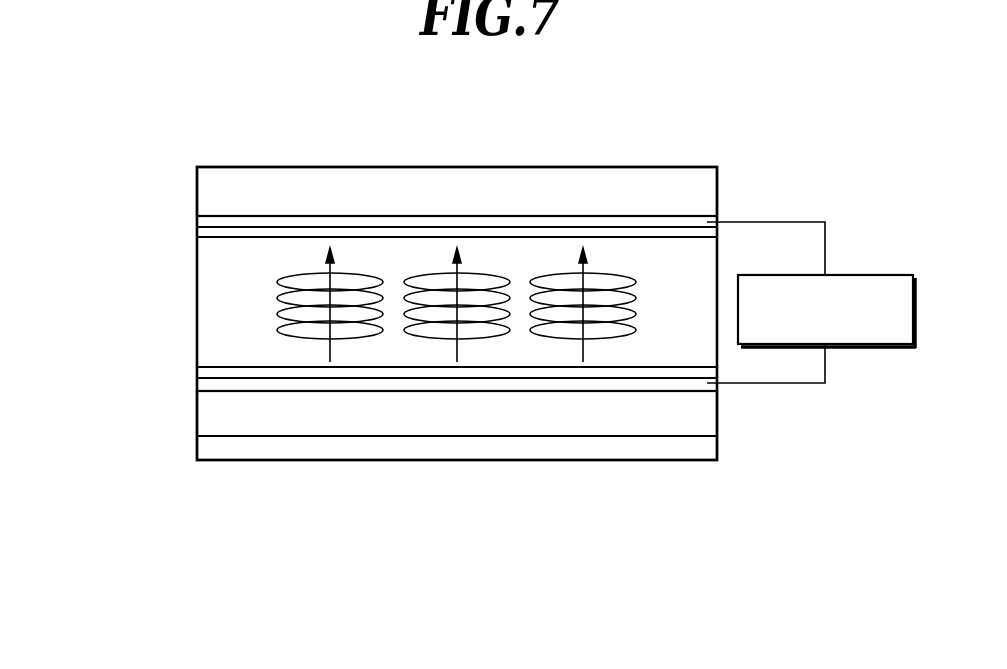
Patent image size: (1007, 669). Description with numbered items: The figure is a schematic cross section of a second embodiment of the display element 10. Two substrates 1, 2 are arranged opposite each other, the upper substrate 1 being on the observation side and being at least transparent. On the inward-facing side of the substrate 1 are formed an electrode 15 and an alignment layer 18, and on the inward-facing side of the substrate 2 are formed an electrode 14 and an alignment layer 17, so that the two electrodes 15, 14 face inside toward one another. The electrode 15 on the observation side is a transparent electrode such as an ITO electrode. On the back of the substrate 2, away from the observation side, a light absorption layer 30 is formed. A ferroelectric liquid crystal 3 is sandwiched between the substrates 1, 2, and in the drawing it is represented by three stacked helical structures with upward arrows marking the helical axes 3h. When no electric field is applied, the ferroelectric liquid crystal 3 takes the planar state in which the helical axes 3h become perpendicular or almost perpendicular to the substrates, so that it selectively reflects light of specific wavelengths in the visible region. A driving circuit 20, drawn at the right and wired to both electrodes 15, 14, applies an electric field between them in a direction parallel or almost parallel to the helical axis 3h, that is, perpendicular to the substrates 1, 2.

The display element 10 is at (218, 90).
The substrate 1 is at (211, 199).
The substrate 2 is at (211, 425).
The ferroelectric liquid crystal 3 is at (236, 258).
The helical axis 3h is at (583, 350).
The electrode 14 is at (457, 385).
The electrode 15 is at (605, 222).
The alignment layer 17 is at (548, 373).
The alignment layer 18 is at (487, 233).
The driving circuit 20 is at (870, 275).
The light absorption layer 30 is at (313, 450).